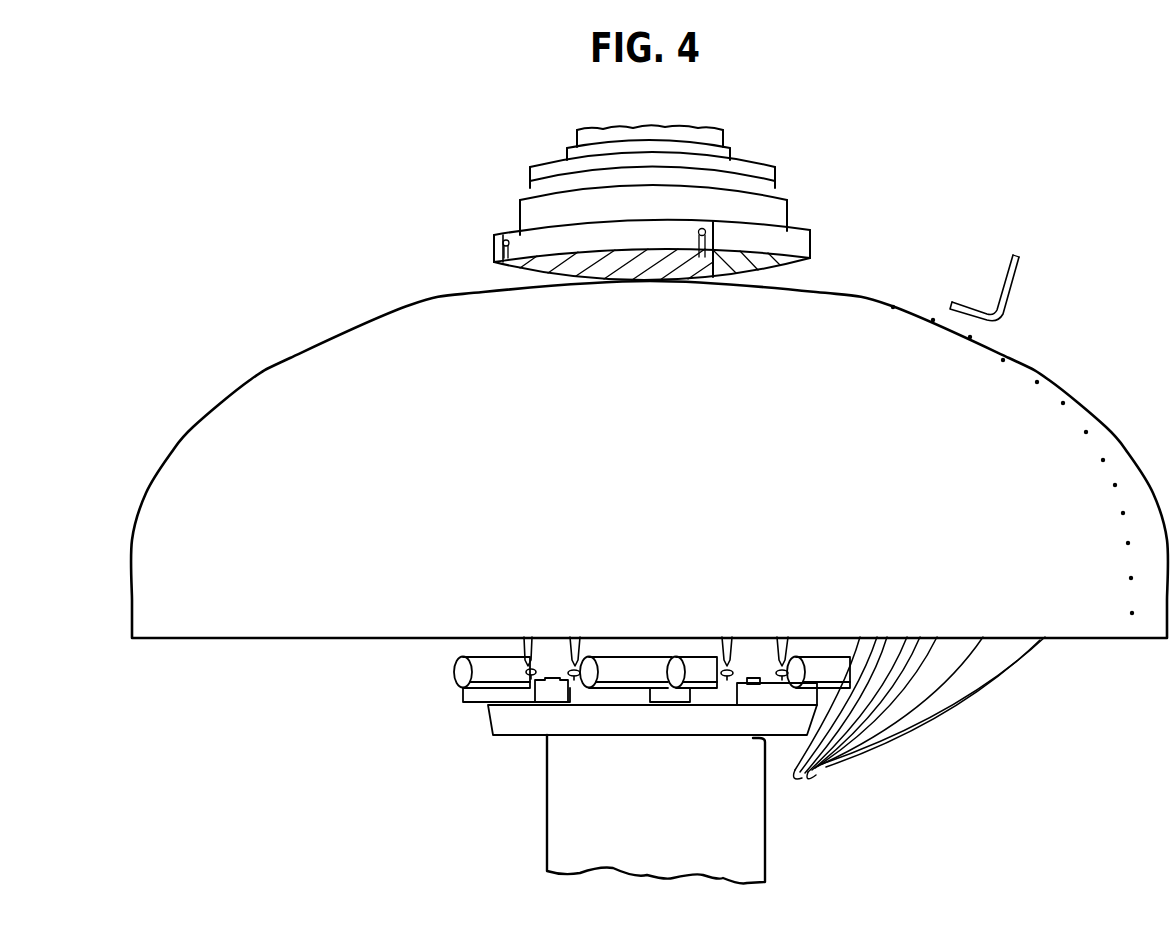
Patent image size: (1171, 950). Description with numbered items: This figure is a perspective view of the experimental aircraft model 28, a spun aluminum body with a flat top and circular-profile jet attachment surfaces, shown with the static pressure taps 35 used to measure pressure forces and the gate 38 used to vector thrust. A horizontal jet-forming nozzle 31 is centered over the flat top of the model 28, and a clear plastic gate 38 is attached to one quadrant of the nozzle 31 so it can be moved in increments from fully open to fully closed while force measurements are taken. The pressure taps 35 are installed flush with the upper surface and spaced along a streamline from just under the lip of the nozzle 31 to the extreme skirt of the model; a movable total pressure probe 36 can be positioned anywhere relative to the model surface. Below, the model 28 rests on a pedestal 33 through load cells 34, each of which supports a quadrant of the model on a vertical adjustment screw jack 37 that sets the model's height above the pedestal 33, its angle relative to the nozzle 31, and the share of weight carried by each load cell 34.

The aircraft model 28 is at (207, 462).
The jet-forming nozzle 31 is at (812, 240).
The pedestal 33 is at (750, 838).
The load cells 34 is at (612, 660).
The pressure taps 35 is at (1040, 382).
The total pressure probe 36 is at (1012, 288).
The vertical adjustment screw jack 37 is at (580, 681).
The gate 38 is at (510, 238).